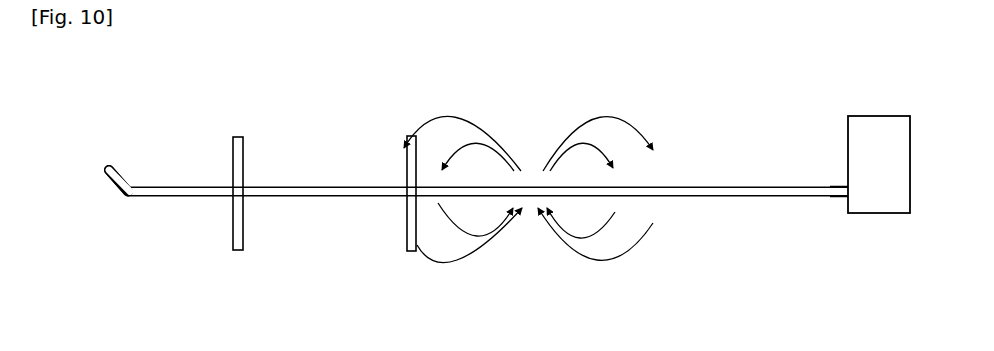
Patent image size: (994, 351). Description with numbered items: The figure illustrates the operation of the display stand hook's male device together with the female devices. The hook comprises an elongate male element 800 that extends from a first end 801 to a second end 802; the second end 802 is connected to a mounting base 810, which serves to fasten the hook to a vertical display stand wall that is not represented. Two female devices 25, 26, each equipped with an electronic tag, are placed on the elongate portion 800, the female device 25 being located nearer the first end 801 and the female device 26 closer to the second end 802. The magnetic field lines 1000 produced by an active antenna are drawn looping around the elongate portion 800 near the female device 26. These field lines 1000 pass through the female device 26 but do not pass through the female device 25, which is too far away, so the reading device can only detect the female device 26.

The male element 800 is at (772, 186).
The first end 801 is at (109, 187).
The second end 802 is at (838, 201).
The mounting base 810 is at (877, 214).
The female device 25 is at (238, 251).
The female device 26 is at (410, 252).
The magnetic field lines 1000 is at (553, 152).